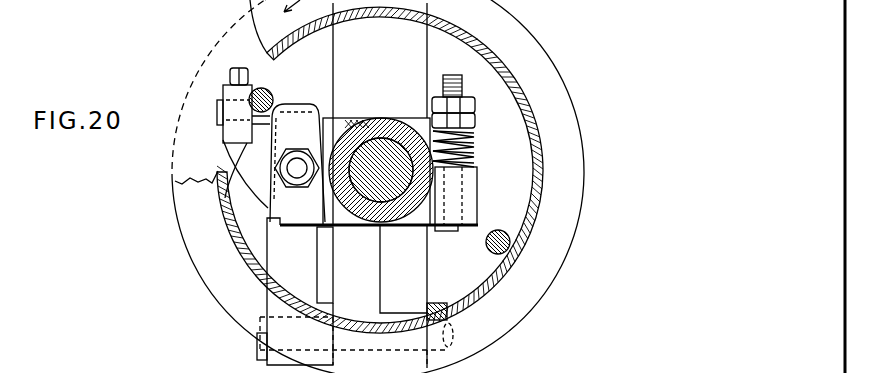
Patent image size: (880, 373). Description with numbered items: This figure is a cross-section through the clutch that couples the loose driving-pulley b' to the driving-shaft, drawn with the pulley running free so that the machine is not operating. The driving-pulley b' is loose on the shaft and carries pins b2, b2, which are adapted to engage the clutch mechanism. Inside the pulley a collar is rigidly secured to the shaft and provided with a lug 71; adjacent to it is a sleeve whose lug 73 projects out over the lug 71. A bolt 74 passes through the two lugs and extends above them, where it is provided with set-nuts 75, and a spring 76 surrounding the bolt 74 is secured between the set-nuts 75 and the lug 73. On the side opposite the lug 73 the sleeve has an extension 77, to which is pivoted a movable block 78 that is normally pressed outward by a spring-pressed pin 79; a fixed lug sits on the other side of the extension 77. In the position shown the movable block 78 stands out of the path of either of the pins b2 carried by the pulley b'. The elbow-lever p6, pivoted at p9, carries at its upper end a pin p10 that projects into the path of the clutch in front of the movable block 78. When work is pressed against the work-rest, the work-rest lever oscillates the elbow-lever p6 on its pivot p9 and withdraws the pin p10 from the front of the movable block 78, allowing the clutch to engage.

The driving-pulley b' is at (379, 186).
The pins b2 is at (266, 92).
The elbow-lever p6 is at (225, 203).
The pivot p9 is at (255, 349).
The pin p10 is at (275, 140).
The lug 71 is at (470, 212).
The lug 73 is at (478, 176).
The bolt 74 is at (452, 229).
The set-nuts 75 is at (463, 105).
The spring 76 is at (470, 138).
The extension 77 is at (280, 226).
The movable block 78 is at (386, 118).
The spring-pressed pin 79 is at (333, 128).